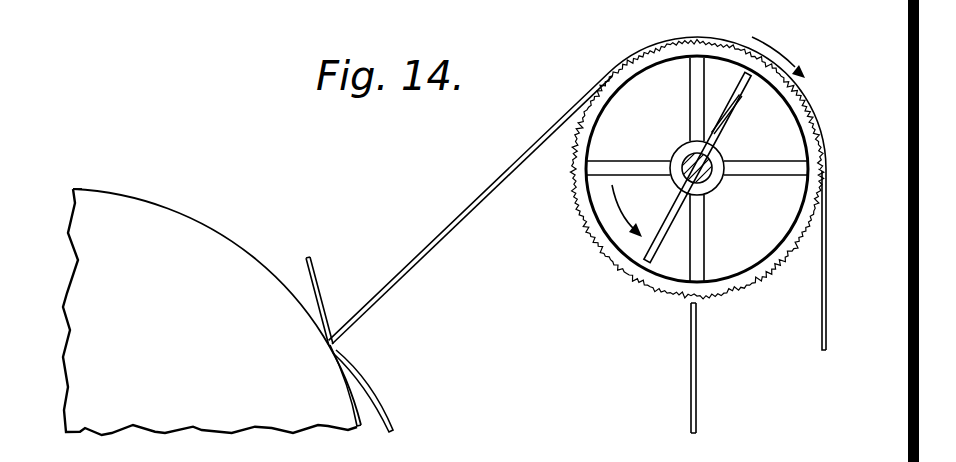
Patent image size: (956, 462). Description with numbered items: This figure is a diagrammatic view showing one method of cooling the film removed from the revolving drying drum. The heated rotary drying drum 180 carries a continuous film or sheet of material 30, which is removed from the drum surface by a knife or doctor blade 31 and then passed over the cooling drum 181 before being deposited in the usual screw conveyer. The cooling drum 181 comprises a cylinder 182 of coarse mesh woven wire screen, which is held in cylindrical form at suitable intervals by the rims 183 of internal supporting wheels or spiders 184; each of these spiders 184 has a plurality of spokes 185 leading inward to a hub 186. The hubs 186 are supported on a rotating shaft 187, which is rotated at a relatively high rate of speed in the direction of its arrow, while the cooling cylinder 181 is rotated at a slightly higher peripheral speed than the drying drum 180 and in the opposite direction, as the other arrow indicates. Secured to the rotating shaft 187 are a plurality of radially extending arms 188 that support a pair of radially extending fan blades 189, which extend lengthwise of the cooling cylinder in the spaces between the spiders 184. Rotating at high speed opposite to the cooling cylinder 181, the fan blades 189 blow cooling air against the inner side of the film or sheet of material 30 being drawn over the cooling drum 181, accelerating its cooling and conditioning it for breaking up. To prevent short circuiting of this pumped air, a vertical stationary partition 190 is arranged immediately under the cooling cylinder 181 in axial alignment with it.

The continuous film or sheet of material 30 is at (474, 201).
The knife or doctor blade 31 is at (320, 278).
The heated rotary drying drum 180 is at (212, 201).
The cooling drum 181 is at (580, 247).
The cylinder of coarse mesh woven wire screen 182 is at (657, 293).
The rims 183 is at (763, 266).
The internal supporting wheels or spiders 184 is at (741, 184).
The spokes 185 is at (691, 97).
The hub 186 is at (678, 149).
The rotating shaft 187 is at (722, 160).
The radially extending arms 188 is at (731, 133).
The fan blades 189 is at (742, 95).
The vertical stationary partition 190 is at (700, 335).